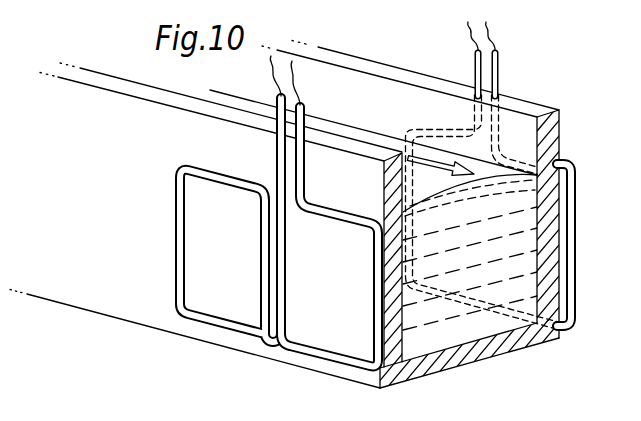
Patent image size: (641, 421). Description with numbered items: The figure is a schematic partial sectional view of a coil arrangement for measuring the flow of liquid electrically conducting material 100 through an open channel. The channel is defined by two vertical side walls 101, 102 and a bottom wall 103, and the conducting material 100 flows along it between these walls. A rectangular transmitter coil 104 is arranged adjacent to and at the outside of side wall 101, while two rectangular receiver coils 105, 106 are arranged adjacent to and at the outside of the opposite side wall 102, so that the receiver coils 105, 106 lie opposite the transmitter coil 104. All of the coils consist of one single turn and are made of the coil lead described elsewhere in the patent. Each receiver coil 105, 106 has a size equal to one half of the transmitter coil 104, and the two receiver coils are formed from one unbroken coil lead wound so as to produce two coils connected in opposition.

The liquid electrically conducting material 100 is at (522, 279).
The side wall 101 is at (503, 100).
The side wall 102 is at (97, 283).
The bottom wall 103 is at (477, 347).
The transmitter coil 104 is at (567, 189).
The receiver coil 105 is at (218, 326).
The receiver coil 106 is at (322, 353).